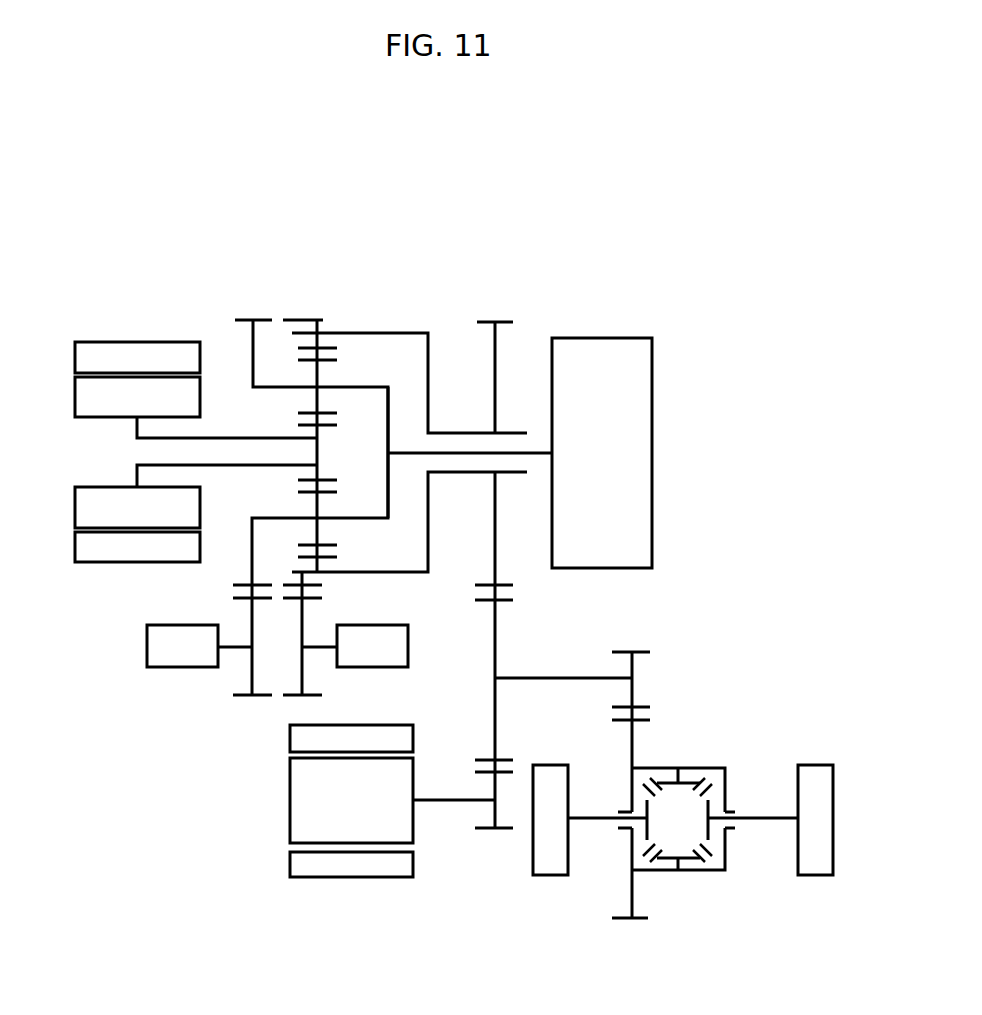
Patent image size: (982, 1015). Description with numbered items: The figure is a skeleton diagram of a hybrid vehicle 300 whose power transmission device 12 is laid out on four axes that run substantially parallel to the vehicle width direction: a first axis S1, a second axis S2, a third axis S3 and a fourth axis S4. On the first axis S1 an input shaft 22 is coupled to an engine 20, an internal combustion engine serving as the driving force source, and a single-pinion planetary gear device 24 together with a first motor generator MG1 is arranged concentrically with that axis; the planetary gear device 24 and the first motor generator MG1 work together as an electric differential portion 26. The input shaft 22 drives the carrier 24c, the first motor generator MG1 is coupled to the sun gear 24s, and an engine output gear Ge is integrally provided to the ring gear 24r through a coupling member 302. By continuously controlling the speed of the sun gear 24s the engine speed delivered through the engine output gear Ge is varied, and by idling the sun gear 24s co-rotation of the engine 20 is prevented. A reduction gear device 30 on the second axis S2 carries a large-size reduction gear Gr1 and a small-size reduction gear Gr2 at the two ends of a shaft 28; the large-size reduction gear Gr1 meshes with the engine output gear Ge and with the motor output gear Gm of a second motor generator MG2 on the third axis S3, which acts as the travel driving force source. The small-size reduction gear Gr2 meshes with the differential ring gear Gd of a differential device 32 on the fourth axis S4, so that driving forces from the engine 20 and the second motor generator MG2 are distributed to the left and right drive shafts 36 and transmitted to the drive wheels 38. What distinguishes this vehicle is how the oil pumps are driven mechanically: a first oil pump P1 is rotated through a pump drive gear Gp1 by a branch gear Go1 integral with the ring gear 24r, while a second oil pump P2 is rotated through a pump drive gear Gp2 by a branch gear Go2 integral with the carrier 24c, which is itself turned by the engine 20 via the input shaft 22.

The power transmission device 12 is at (162, 243).
The first motor generator MG1 is at (136, 331).
The first axis S1 is at (192, 452).
The electric differential portion 26 is at (352, 272).
The branch gear Go2 is at (245, 318).
The branch gear Go1 is at (312, 318).
The planetary gear device 24 is at (242, 533).
The carrier 24c is at (338, 383).
The sun gear 24s is at (300, 423).
The ring gear 24r is at (330, 557).
The coupling member 302 is at (430, 398).
The engine output gear Ge is at (488, 317).
The input shaft 22 is at (460, 457).
The engine 20 is at (643, 398).
The hybrid vehicle 300 is at (522, 207).
The pump drive gear Gp2 is at (248, 698).
The pump drive gear Gp1 is at (308, 698).
The second oil pump P2 is at (200, 646).
The first oil pump P1 is at (355, 646).
The second motor generator MG2 is at (351, 815).
The third axis S3 is at (375, 803).
The large-size reduction gear Gr1 is at (508, 595).
The motor output gear Gm is at (490, 832).
The second axis S2 is at (468, 680).
The shaft 28 is at (552, 682).
The reduction gear device 30 is at (703, 667).
The small-size reduction gear Gr2 is at (638, 650).
The differential ring gear Gd is at (643, 717).
The differential device 32 is at (713, 890).
The drive shafts 36 is at (595, 827).
The drive wheels 38 is at (550, 863).
The fourth axis S4 is at (856, 823).